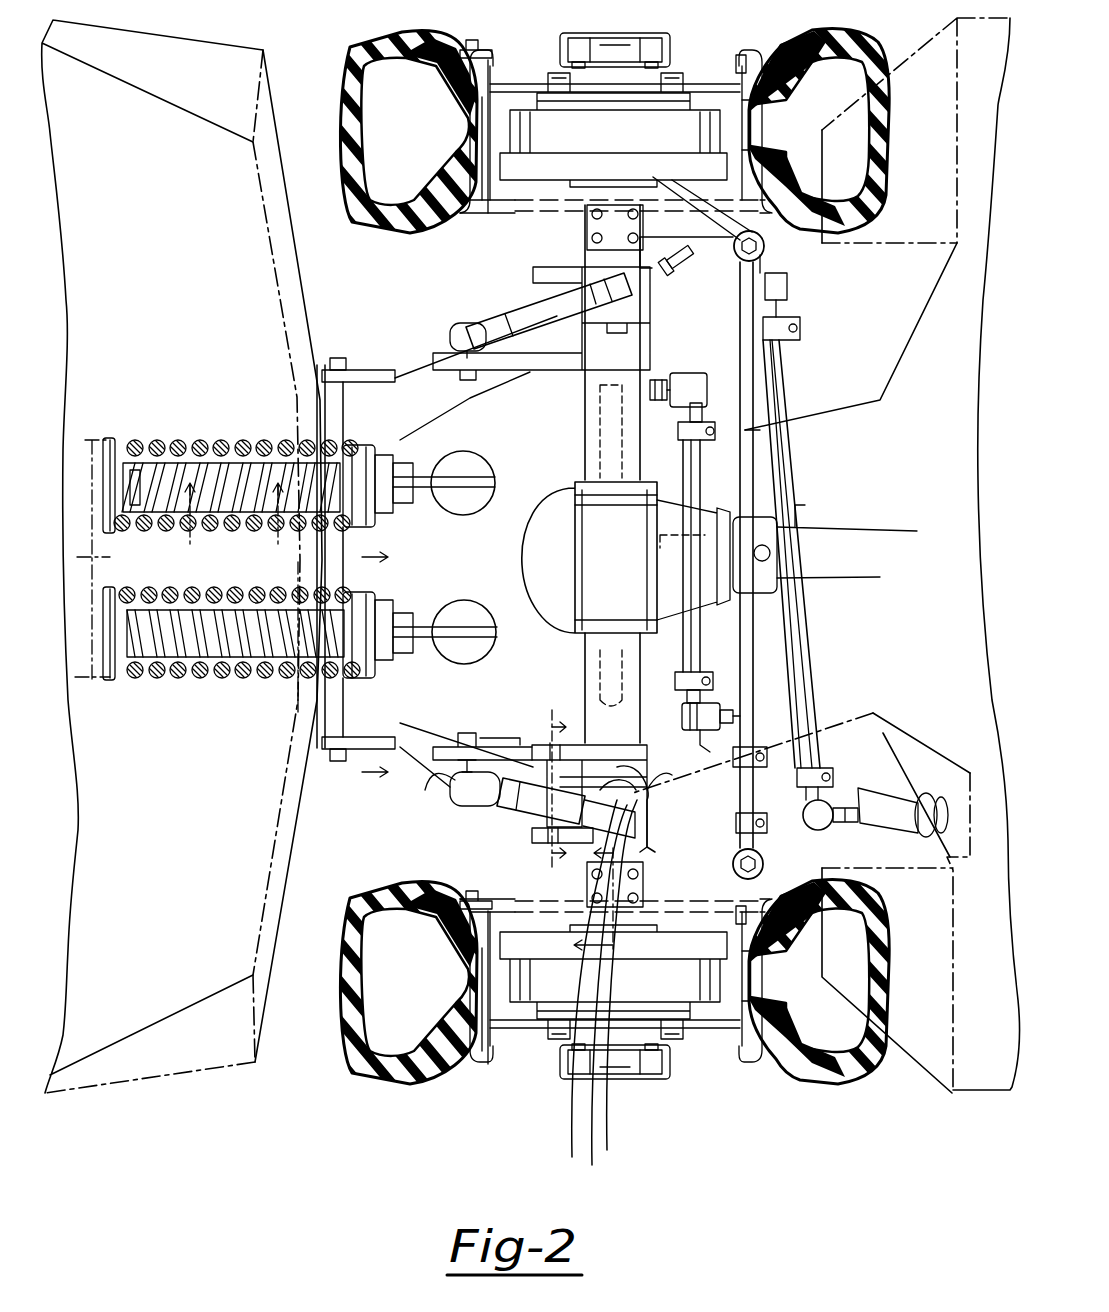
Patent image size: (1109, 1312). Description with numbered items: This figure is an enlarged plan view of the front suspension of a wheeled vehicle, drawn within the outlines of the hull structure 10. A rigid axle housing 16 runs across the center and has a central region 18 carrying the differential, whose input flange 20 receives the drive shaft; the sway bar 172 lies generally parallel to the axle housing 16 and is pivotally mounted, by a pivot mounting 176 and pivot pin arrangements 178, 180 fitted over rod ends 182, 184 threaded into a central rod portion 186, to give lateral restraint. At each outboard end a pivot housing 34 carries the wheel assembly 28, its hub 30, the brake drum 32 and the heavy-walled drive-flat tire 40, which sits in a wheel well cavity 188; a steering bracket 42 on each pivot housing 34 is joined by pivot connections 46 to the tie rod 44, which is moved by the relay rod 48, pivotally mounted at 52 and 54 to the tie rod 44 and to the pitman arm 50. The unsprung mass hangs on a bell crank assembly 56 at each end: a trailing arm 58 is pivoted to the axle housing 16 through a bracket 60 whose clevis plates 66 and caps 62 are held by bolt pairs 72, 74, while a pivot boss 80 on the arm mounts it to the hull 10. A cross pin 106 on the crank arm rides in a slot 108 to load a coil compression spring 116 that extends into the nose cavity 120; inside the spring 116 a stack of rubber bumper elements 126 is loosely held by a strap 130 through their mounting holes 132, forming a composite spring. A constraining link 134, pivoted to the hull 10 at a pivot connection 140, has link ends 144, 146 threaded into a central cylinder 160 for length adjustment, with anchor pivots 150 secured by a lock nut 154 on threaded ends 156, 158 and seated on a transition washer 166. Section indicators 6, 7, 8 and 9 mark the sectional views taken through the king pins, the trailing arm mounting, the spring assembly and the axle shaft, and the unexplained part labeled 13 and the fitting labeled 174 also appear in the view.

The hull structure 10 is at (234, 1095).
The steering cylinder 13 is at (502, 325).
The axle housing 16 is at (577, 460).
The central region 18 is at (545, 618).
The differential input flange 20 is at (778, 522).
The wheel assembly 28 is at (530, 84).
The hub 30 is at (570, 1068).
The brake drum 32 is at (470, 945).
The pivot housing 34 is at (550, 945).
The tires 40 is at (345, 88).
The steering bracket 42 is at (758, 780).
The tie rod 44 is at (738, 325).
The pivot connections 46 is at (766, 247).
The relay rod 48 is at (790, 472).
The pitman arm 50 is at (827, 792).
The pivotal mounting 52 is at (786, 315).
The pivotal mounting 54 is at (842, 826).
The bell crank assembly 56 is at (459, 702).
The trailing arm 58 is at (448, 402).
The bracket 60 is at (632, 305).
The caps 62 is at (560, 745).
The clevis plates 66 is at (562, 742).
The bolt pair 72 is at (530, 745).
The bolt pair 74 is at (540, 843).
The pivot boss 80 is at (315, 725).
The cross pin 106 is at (360, 450).
The slot 108 is at (396, 614).
The coil compression spring 116 is at (180, 450).
The nose cavity 120 is at (231, 514).
The bumper elements 126 is at (238, 450).
The strap 130 is at (468, 458).
The mounting hole 132 is at (102, 440).
The constraining link 134 is at (465, 805).
The pivot connection 140 is at (450, 768).
The link end 144 is at (458, 765).
The link end 146 is at (582, 994).
The anchor pivot 150 is at (462, 802).
The lock nut 154 is at (625, 977).
The threaded end 156 is at (478, 742).
The threaded end 158 is at (646, 798).
The central threaded cylinder 160 is at (512, 808).
The transition washer 166 is at (615, 996).
The sway bar 172 is at (681, 645).
The fitting 174 is at (678, 370).
The pivot mounting 176 is at (688, 748).
The pivot pin arrangement 178 is at (758, 420).
The pivot pin arrangement 180 is at (681, 715).
The rod end 182 is at (656, 770).
The rod end 184 is at (708, 386).
The central rod portion 186 is at (702, 660).
The wheel well cavities 188 is at (345, 879).
The section line 6- 6 is at (354, 657).
The section line 7- 7 is at (561, 788).
The section line 8- 8 is at (233, 524).
The section line 9- 9 is at (578, 890).